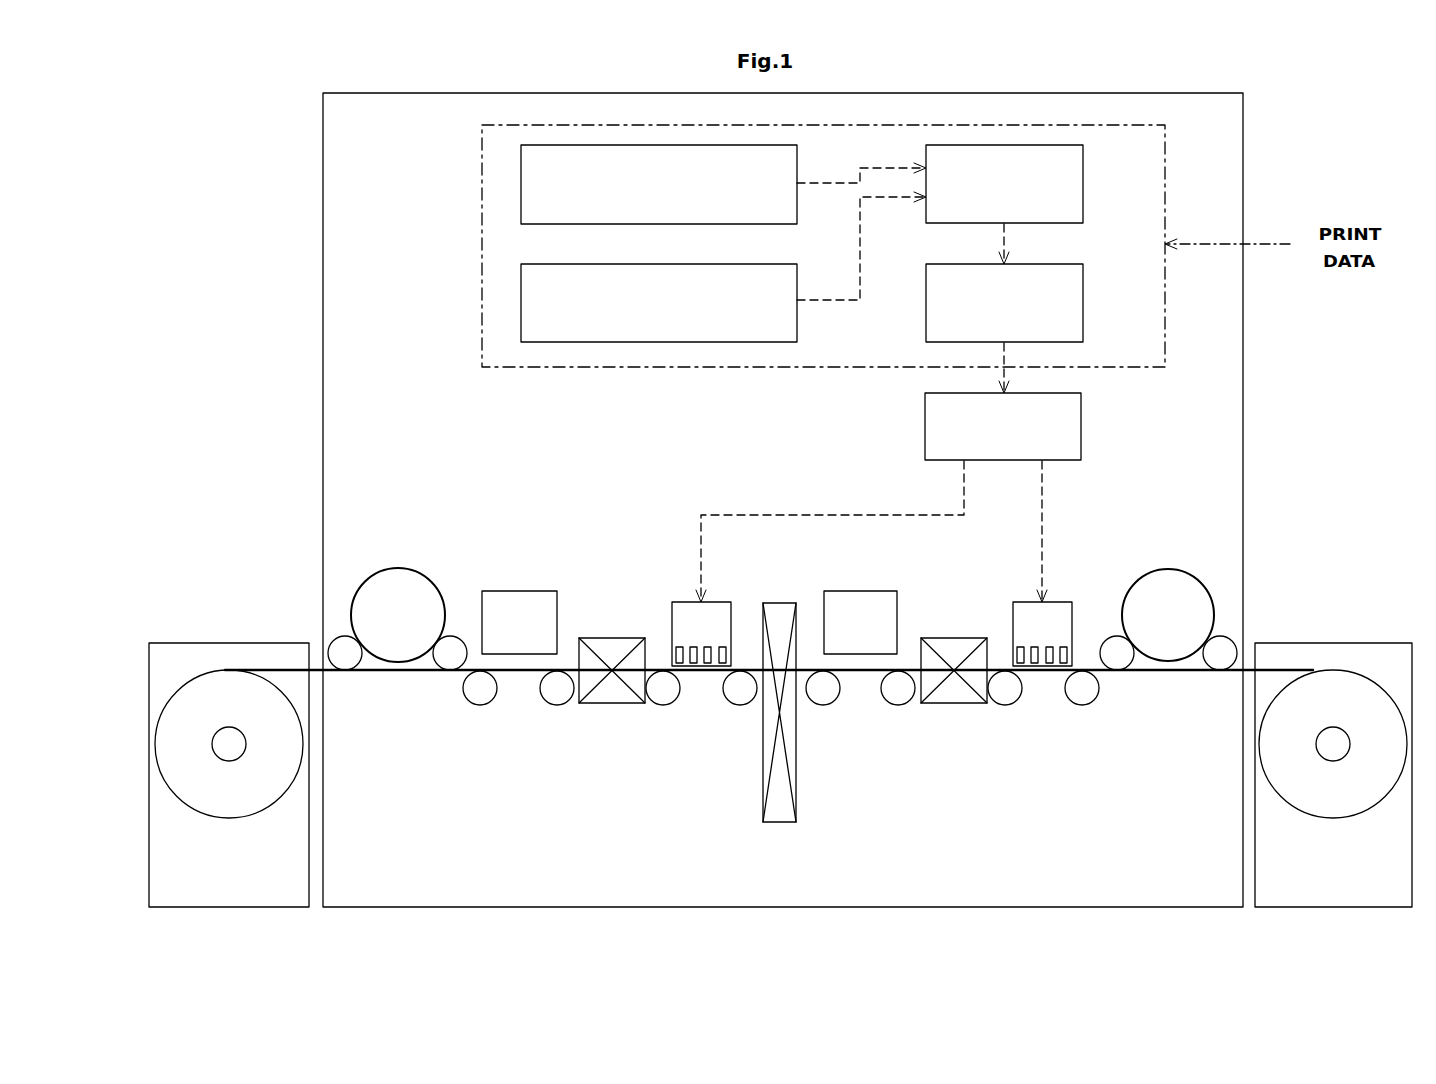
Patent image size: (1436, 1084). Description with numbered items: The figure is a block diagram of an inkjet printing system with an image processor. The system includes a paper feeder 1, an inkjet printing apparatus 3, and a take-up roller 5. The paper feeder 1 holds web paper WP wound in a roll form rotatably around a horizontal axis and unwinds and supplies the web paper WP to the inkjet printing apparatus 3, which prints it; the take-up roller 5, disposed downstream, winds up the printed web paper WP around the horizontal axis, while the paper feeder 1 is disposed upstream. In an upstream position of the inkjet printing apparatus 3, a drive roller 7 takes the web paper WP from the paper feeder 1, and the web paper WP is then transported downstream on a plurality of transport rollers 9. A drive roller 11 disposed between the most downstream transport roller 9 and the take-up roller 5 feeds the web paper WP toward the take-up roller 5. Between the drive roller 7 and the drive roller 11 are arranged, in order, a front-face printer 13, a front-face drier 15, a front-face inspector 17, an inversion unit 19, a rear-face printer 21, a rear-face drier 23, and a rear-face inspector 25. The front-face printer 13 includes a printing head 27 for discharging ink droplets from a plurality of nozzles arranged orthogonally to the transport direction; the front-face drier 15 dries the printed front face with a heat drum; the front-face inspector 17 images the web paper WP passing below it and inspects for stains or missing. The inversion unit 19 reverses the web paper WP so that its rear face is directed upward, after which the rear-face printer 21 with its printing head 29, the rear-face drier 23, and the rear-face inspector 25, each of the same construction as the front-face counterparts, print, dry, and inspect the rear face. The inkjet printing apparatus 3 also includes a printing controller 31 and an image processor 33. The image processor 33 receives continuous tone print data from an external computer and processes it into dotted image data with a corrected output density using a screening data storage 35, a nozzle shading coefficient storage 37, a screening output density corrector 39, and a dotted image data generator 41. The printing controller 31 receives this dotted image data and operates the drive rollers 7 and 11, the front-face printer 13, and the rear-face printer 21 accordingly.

The paper feeder 1 is at (1330, 642).
The inkjet printing apparatus 3 is at (1245, 393).
The take-up roller 5 is at (245, 642).
The drive roller 7 is at (1198, 573).
The transport rollers 9 is at (480, 706).
The drive roller 11 is at (428, 573).
The front-face printer 13 is at (1058, 601).
The front-face drier 15 is at (943, 637).
The front-face inspector 17 is at (880, 590).
The inversion unit 19 is at (780, 602).
The rear-face printer 21 is at (718, 601).
The rear-face drier 23 is at (603, 637).
The rear-face inspector 25 is at (500, 590).
The printing head 27 is at (1020, 647).
The printing head 29 is at (679, 647).
The printing controller 31 is at (1081, 397).
The image processor 33 is at (1165, 160).
The screening data storage 35 is at (797, 152).
The nozzle shading coefficient storage 37 is at (797, 328).
The screening output density corrector 39 is at (1083, 183).
The dotted image data generator 41 is at (1083, 277).
The web paper WP is at (196, 673).